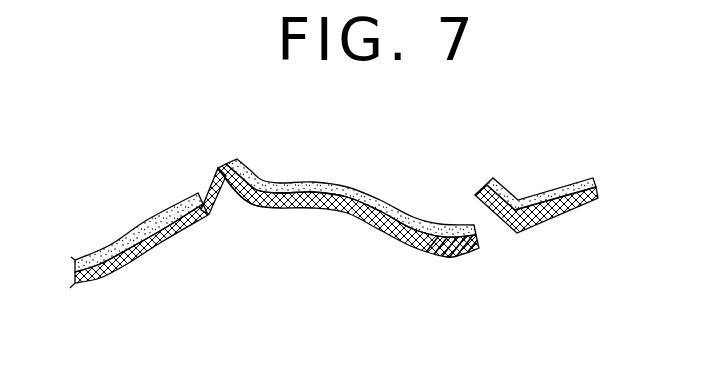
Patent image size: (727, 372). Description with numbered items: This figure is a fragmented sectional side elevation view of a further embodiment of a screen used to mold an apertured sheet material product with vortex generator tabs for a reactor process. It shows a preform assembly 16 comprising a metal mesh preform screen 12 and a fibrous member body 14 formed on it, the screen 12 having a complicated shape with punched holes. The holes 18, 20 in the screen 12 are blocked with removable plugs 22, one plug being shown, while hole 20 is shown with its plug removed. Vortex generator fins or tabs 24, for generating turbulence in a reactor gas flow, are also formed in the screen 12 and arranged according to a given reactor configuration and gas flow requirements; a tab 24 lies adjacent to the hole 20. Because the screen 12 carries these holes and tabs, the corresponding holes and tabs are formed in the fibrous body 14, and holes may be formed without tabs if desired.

The mesh preform screen 12 is at (402, 247).
The fibrous member body 14 is at (363, 185).
The preform assembly 16 is at (127, 205).
The hole 18 is at (228, 208).
The hole 20 is at (493, 237).
The removable plug 22 is at (208, 187).
The vortex generator fin or tab 24 is at (253, 170).